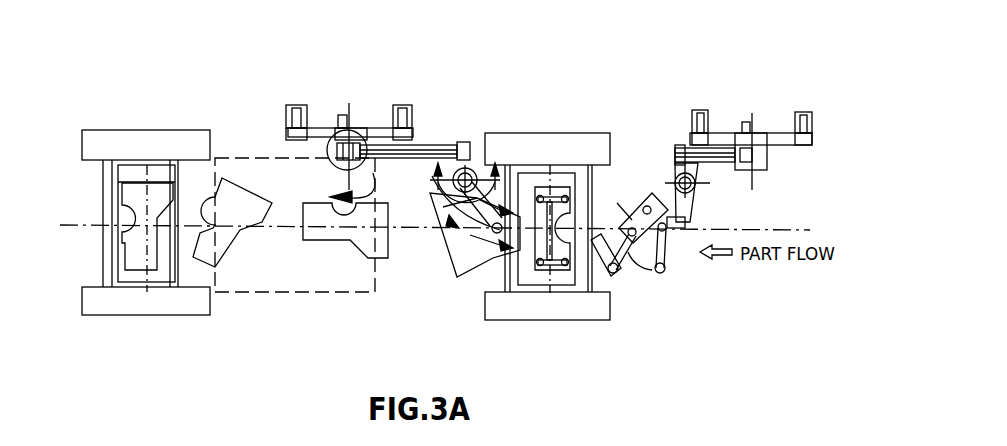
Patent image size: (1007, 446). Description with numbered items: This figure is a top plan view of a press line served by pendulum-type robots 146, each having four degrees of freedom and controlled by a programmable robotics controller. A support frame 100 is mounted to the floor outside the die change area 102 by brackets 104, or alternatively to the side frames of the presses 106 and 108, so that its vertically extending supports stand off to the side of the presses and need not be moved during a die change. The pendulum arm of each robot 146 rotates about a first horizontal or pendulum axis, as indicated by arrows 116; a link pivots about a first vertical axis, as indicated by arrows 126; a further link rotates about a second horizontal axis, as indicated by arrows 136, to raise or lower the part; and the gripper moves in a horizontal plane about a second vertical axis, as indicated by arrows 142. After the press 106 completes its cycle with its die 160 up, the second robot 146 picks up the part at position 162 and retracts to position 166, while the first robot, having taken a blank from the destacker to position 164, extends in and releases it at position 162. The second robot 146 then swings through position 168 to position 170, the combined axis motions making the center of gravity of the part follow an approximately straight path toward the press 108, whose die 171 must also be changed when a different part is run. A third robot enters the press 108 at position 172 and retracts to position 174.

The support frame 100 is at (318, 128).
The die change area 102 is at (252, 290).
The brackets 104 is at (832, 100).
The press 106 is at (520, 133).
The press 108 is at (110, 130).
The arrows (first horizontal or pendulum axis rotation) 116 is at (382, 167).
The arrows (first vertical axis rotation) 126 is at (448, 212).
The arrows (second horizontal axis rotation) 136 is at (500, 247).
The arrows (second vertical axis rotation) 142 is at (515, 255).
The robot 146 is at (430, 145).
The die 160 is at (563, 173).
The position 162 is at (553, 280).
The position 164 is at (637, 253).
The position 166 is at (447, 237).
The position 168 is at (343, 248).
The position 170 is at (223, 237).
The die 171 is at (130, 165).
The position 172 is at (137, 275).
The position 174 is at (65, 238).